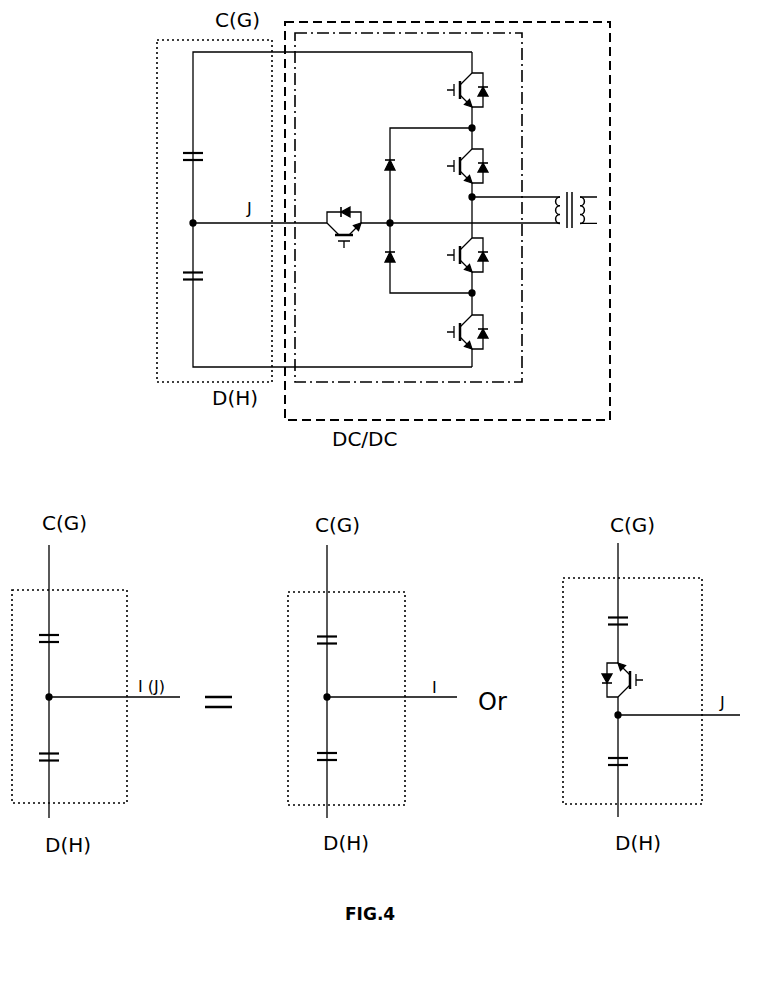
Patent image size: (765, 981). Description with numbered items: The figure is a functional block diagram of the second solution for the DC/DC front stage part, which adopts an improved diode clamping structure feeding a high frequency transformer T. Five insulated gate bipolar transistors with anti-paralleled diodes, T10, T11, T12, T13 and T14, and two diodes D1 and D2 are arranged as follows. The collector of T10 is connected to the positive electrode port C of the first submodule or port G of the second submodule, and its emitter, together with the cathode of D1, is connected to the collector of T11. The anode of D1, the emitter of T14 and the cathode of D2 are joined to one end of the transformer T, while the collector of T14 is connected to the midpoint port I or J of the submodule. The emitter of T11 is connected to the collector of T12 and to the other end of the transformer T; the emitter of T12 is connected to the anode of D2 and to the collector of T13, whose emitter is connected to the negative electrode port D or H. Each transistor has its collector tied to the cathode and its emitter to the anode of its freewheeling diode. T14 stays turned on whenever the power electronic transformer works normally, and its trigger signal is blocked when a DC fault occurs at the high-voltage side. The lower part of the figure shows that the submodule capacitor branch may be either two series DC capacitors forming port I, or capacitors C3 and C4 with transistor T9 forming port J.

The DC capacitor C3 is at (638, 617).
The DC capacitor C4 is at (640, 758).
The insulated gate bipolar transistor T9 is at (605, 680).
The insulated gate bipolar transistor T10 is at (445, 90).
The insulated gate bipolar transistor T11 is at (445, 166).
The insulated gate bipolar transistor T12 is at (445, 255).
The insulated gate bipolar transistor T13 is at (445, 332).
The insulated gate bipolar transistor T14 is at (342, 241).
The diode D1 is at (428, 175).
The diode D2 is at (428, 259).
The high frequency transformer T is at (576, 222).